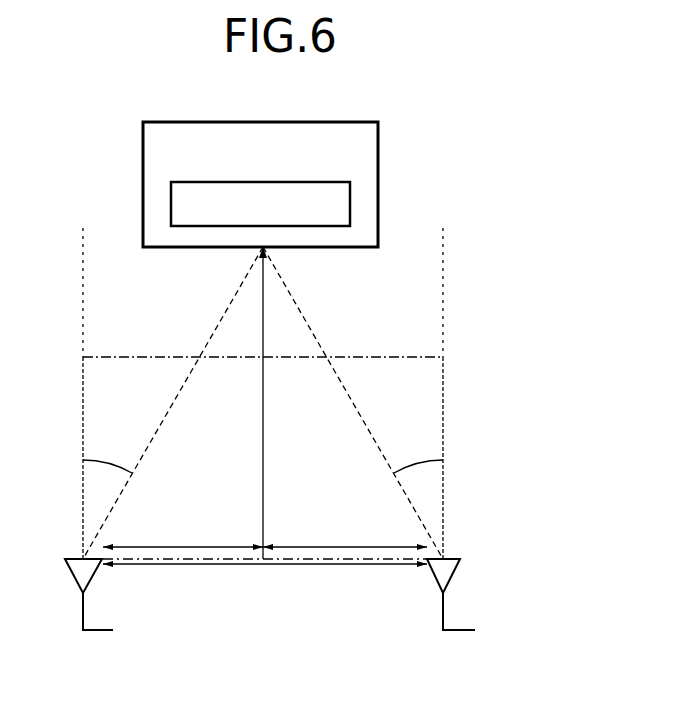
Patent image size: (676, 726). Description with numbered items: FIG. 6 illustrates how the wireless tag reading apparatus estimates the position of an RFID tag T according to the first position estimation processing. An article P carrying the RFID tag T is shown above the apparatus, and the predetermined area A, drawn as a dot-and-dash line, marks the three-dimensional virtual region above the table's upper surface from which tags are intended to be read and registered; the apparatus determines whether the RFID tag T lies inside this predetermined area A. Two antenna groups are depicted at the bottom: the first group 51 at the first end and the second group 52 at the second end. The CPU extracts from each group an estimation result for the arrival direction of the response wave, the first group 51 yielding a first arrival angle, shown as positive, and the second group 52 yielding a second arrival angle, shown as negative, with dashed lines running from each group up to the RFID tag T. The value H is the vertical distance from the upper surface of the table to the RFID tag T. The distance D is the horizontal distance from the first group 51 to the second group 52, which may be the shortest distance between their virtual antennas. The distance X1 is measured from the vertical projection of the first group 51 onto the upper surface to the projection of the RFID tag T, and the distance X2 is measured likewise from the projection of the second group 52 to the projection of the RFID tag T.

The article P is at (340, 122).
The RFID tag T is at (333, 182).
The predetermined area A is at (350, 357).
The first group 51 is at (90, 580).
The second group 52 is at (452, 580).
The vertical distance H is at (273, 403).
The horizontal distance between groups D is at (265, 579).
The first horizontal distance X1 is at (183, 533).
The second horizontal distance X2 is at (345, 533).